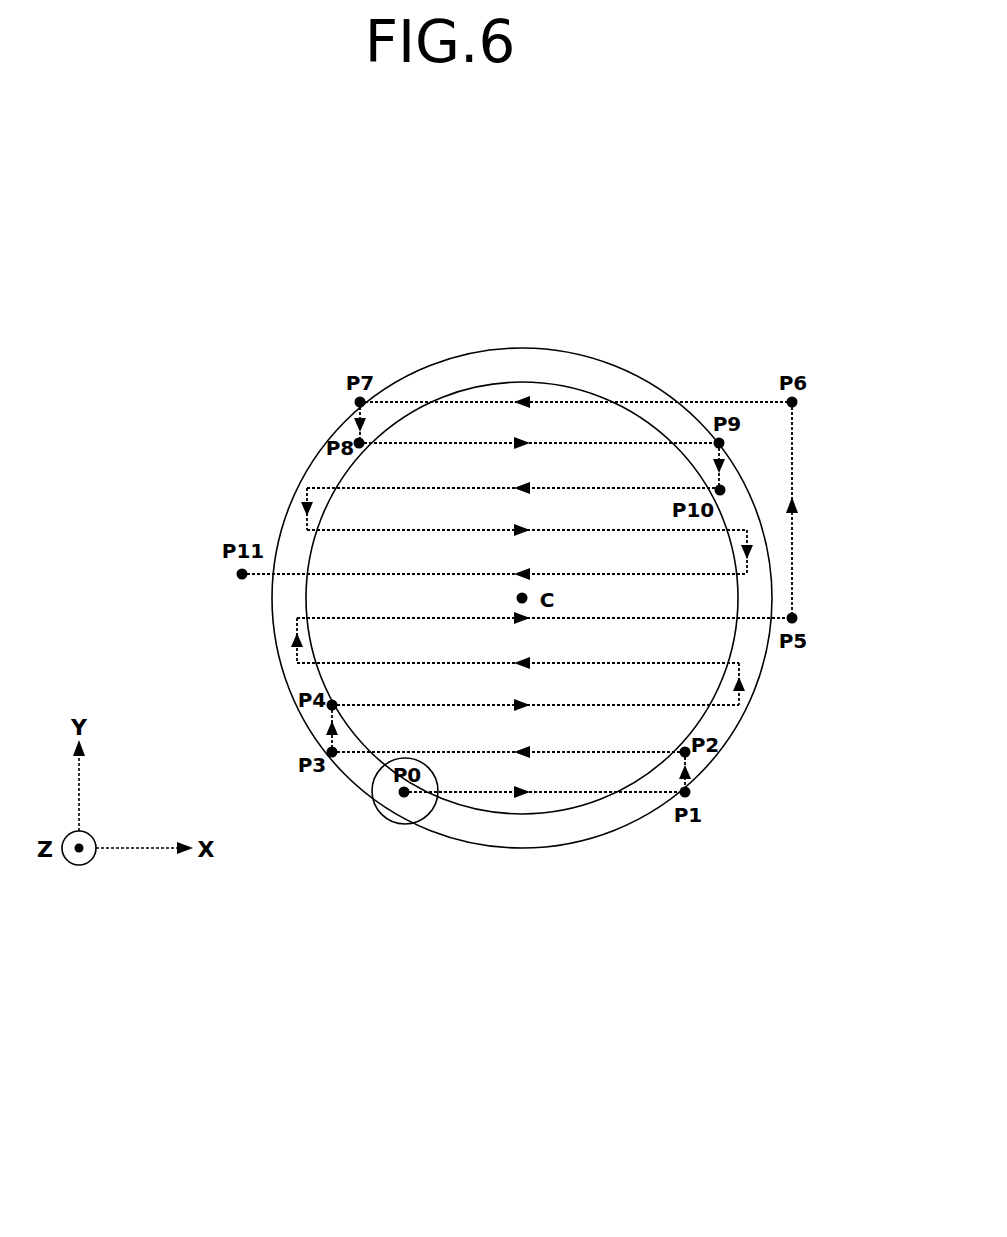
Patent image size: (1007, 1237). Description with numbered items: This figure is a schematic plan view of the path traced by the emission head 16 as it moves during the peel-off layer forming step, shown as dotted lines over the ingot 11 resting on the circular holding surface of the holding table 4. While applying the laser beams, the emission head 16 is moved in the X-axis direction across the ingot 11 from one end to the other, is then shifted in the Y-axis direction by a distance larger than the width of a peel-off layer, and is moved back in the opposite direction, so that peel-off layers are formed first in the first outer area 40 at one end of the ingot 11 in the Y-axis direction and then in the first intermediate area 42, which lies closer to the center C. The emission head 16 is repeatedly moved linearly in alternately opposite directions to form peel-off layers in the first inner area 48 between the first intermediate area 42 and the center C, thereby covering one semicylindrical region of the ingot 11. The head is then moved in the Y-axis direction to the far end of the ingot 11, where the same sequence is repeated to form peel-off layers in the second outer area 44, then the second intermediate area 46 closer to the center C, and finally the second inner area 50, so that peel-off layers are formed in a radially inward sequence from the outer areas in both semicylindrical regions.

The holding table 4 is at (590, 367).
The ingot 11 is at (482, 379).
The emission head 16 is at (400, 815).
The first outer area 40 is at (568, 801).
The first intermediate area 42 is at (492, 763).
The second outer area 44 is at (548, 396).
The second intermediate area 46 is at (614, 427).
The first inner area 48 is at (543, 716).
The second inner area 50 is at (469, 472).